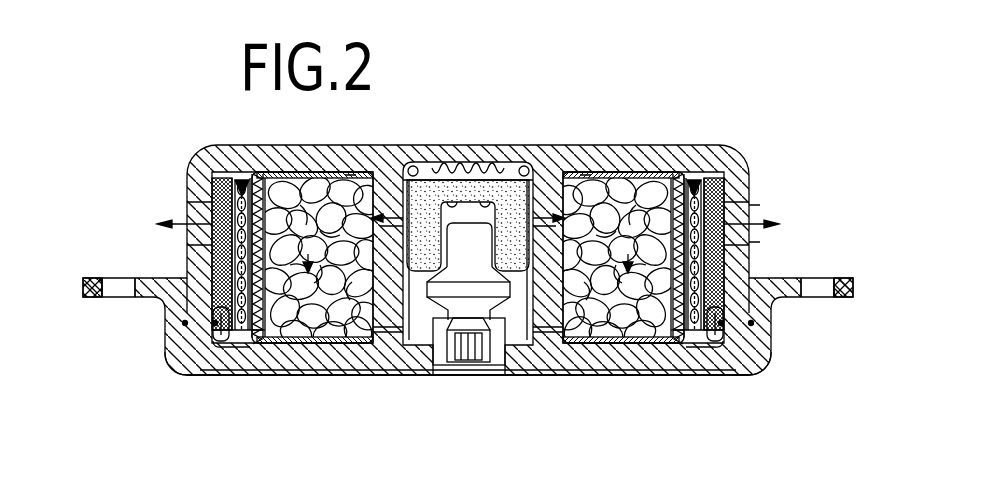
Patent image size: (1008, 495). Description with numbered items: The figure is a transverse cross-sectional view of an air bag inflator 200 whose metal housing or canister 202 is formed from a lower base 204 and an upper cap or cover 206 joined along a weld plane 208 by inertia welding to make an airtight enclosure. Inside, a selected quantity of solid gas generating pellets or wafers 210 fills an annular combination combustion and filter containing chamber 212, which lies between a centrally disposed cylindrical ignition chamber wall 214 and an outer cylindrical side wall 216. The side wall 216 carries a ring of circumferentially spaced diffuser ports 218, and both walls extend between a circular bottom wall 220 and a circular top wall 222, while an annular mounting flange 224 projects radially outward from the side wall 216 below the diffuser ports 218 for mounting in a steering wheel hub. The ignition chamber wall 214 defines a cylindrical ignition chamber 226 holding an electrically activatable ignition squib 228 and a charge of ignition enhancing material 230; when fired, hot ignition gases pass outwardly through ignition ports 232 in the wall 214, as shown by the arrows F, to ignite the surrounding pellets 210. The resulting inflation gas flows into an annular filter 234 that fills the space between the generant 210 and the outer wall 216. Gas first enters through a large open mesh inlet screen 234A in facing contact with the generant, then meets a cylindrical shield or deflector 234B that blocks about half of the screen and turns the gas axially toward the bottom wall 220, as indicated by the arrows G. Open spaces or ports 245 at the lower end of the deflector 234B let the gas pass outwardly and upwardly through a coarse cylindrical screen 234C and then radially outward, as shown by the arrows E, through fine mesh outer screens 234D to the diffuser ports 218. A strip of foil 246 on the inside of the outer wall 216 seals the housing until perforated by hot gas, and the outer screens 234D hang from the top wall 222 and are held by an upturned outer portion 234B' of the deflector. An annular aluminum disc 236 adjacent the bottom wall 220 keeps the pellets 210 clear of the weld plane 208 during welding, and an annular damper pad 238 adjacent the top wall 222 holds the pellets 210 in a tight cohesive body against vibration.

The air bag inflator 200 is at (501, 451).
The metal housing or canister 202 is at (764, 236).
The lower base 204 is at (162, 361).
The upper cap or cover 206 is at (731, 142).
The weld plane 208 is at (183, 360).
The gas generating pellets or wafers 210 is at (327, 305).
The combination combustion and filter containing chamber 212 is at (380, 172).
The ignition chamber wall 214 is at (405, 168).
The outer side wall 216 is at (213, 262).
The diffuser ports 218 is at (238, 220).
The bottom wall 220 is at (243, 376).
The top wall 222 is at (268, 174).
The mounting flange 224 is at (83, 287).
The ignition chamber 226 is at (437, 345).
The ignition squib 228 is at (488, 290).
The ignition enhancing material 230 is at (487, 185).
The ignition ports 232 is at (380, 389).
The annular filter 234 is at (224, 180).
The gas inlet screen 234A is at (262, 175).
The cylindrical shield or deflector 234B is at (456, 139).
The upturned outer portion of the flow deflector 234B' is at (468, 328).
The coarse cylindrical screen 234C is at (222, 347).
The fine mesh outer screens 234D is at (216, 190).
The annular aluminum disc 236 is at (364, 345).
The annular damper pad 238 is at (283, 239).
The open spaces or ports 245 is at (280, 342).
The strip of foil 246 is at (255, 250).
The arrows E is at (185, 213).
The arrows F is at (412, 200).
The arrows G is at (356, 174).